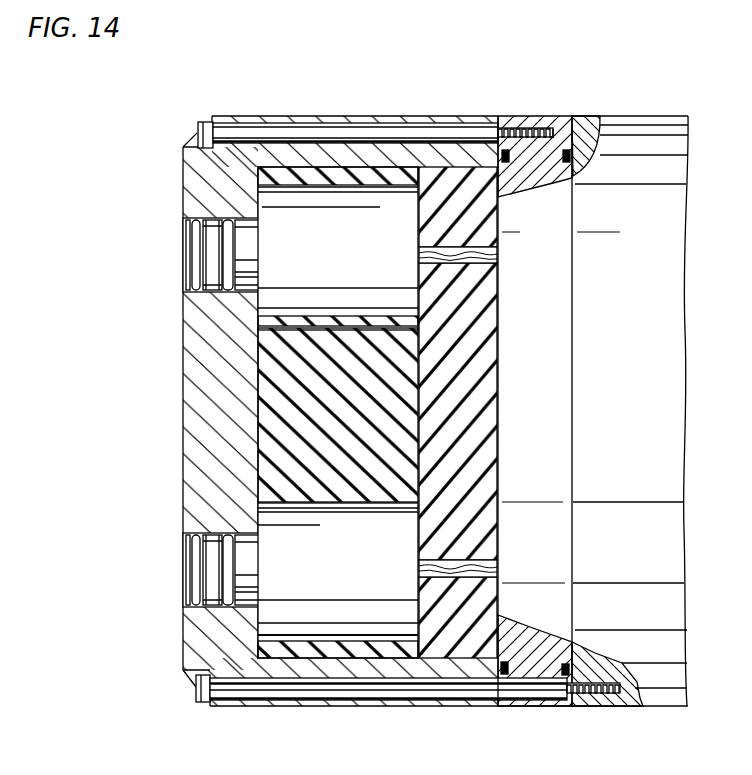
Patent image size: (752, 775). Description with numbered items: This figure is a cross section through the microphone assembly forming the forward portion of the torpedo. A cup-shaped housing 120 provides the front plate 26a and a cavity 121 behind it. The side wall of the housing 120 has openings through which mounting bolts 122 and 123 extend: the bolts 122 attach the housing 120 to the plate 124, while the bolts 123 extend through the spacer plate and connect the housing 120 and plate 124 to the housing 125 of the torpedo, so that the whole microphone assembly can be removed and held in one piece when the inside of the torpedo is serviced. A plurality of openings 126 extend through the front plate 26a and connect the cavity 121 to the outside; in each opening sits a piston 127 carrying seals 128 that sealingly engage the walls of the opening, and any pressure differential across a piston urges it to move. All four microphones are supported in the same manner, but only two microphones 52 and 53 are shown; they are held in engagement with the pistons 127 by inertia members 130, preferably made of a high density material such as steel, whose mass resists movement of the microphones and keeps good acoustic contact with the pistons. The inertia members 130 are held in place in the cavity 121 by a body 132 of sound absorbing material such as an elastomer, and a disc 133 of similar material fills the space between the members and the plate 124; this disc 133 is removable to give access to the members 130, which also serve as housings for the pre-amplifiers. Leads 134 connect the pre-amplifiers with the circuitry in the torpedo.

The front plate 26a is at (198, 404).
The cup-shaped housing 120 is at (313, 707).
The cavity 121 is at (287, 658).
The mounting bolts 122 is at (274, 133).
The mounting bolts 123 is at (385, 688).
The plate 124 is at (534, 118).
The housing of the torpedo 125 is at (637, 128).
The openings 126 is at (210, 218).
The piston 127 is at (186, 241).
The seals 128 is at (223, 294).
The microphone 53 is at (248, 261).
The microphone 52 is at (252, 588).
The inertia members 130 is at (356, 266).
The body of sound absorbing material 132 is at (358, 433).
The disc 133 is at (487, 375).
The leads 134 is at (482, 263).